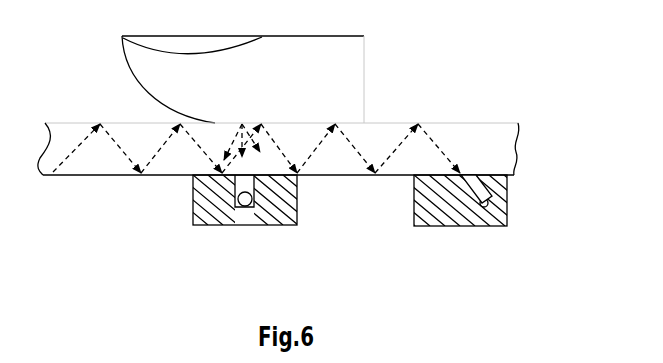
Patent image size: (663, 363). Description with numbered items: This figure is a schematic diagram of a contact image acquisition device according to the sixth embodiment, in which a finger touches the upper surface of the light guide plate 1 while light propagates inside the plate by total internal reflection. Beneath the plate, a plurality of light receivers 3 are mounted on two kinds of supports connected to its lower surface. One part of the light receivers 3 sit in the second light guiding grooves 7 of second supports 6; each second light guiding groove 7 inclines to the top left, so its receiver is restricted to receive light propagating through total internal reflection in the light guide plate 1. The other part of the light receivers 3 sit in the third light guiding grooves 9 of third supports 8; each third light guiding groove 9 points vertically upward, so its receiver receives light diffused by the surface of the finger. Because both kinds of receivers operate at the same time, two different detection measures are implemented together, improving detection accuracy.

The light guide plate 1 is at (463, 140).
The light receivers 3 is at (245, 207).
The second support 6 is at (435, 212).
The second light guiding groove 7 is at (489, 204).
The third support 8 is at (203, 207).
The third light guiding groove 9 is at (255, 183).